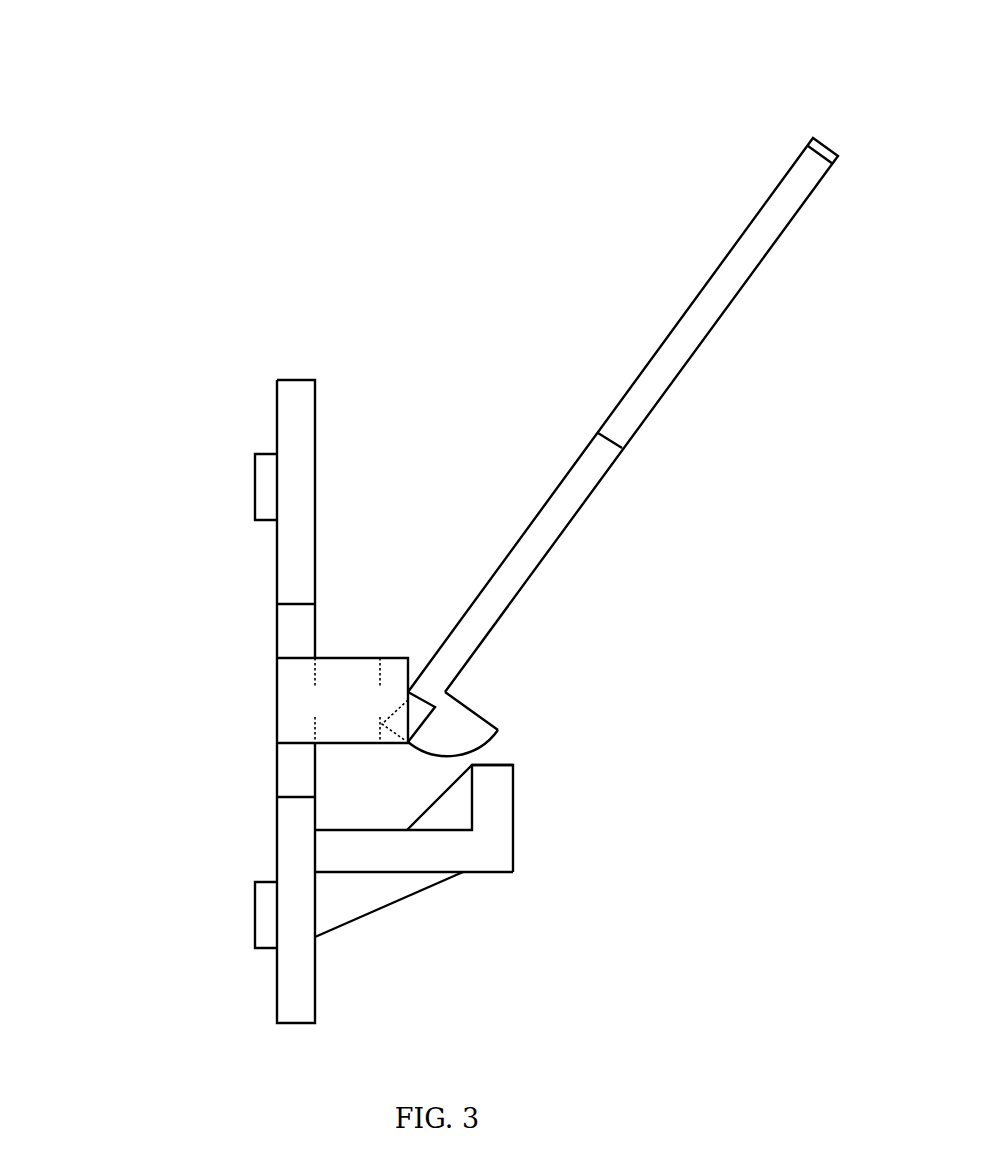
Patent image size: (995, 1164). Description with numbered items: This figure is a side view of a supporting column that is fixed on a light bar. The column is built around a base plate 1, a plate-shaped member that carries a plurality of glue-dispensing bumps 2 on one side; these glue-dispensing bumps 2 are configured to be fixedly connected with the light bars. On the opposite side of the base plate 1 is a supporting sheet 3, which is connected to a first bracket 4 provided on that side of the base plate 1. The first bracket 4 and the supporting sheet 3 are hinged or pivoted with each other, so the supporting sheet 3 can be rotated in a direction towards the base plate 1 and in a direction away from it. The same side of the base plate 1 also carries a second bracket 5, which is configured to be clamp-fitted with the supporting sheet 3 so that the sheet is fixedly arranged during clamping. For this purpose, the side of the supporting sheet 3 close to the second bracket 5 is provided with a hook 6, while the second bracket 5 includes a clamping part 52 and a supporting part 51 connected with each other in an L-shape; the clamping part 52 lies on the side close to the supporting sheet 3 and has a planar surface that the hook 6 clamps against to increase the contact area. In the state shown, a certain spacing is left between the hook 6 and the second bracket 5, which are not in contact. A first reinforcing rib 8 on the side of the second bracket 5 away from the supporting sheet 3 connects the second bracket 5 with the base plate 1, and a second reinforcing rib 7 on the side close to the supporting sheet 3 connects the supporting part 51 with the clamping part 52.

The base plate 1 is at (293, 405).
The glue-dispensing bumps 2 is at (256, 491).
The supporting sheet 3 is at (695, 348).
The first bracket 4 is at (342, 668).
The second bracket 5 is at (562, 863).
The supporting part 51 is at (428, 847).
The clamping part 52 is at (487, 817).
The hook 6 is at (458, 728).
The second reinforcing rib 7 is at (447, 817).
The first reinforcing rib 8 is at (340, 903).